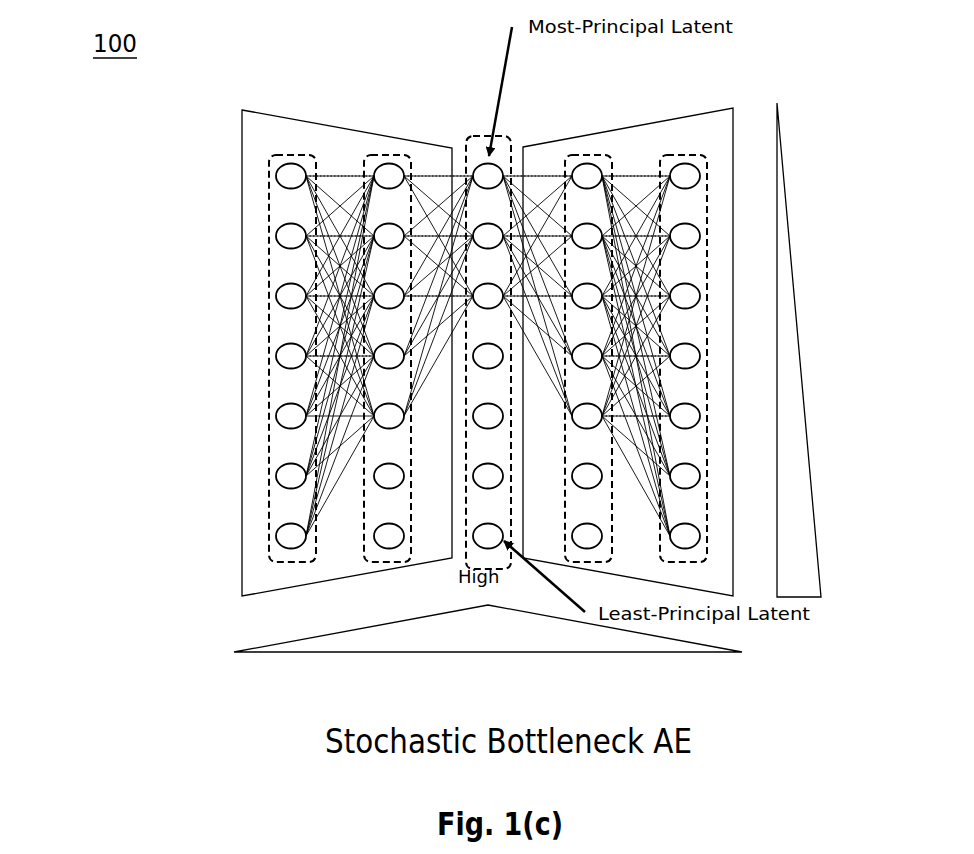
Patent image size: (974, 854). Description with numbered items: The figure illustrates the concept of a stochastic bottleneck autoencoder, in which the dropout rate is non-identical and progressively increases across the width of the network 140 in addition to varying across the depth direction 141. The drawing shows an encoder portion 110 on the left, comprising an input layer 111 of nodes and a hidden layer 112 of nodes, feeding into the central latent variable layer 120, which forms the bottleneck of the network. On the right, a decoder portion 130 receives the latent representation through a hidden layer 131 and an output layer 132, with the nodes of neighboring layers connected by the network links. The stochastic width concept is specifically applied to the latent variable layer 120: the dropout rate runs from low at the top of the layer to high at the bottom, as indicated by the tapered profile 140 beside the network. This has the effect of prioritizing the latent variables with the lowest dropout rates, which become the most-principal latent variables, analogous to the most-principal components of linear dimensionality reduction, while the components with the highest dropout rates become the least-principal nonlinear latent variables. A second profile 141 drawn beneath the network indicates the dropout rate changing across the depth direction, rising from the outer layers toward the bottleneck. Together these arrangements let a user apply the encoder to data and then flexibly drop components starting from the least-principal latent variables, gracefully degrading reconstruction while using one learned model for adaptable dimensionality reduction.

The encoder 110 is at (292, 117).
The encoder input layer 111 is at (263, 178).
The encoder hidden layer 112 is at (390, 152).
The latent variable layer 120 is at (480, 130).
The decoder 130 is at (648, 123).
The decoder hidden layer 131 is at (578, 152).
The decoder output layer 132 is at (680, 155).
The dropout rate across the width of the network 140 is at (798, 279).
The dropout rate across the depth direction 141 is at (703, 657).